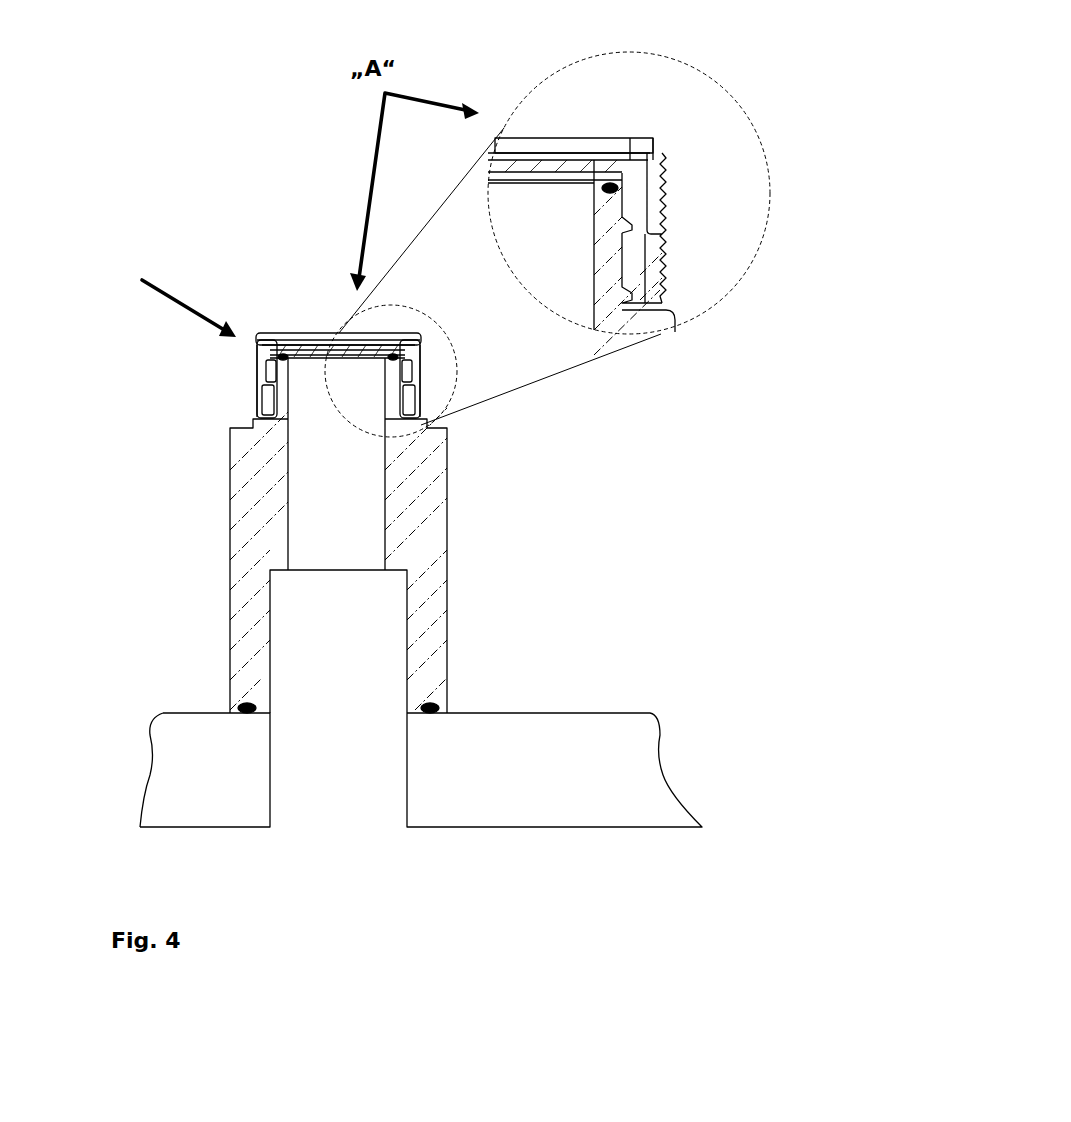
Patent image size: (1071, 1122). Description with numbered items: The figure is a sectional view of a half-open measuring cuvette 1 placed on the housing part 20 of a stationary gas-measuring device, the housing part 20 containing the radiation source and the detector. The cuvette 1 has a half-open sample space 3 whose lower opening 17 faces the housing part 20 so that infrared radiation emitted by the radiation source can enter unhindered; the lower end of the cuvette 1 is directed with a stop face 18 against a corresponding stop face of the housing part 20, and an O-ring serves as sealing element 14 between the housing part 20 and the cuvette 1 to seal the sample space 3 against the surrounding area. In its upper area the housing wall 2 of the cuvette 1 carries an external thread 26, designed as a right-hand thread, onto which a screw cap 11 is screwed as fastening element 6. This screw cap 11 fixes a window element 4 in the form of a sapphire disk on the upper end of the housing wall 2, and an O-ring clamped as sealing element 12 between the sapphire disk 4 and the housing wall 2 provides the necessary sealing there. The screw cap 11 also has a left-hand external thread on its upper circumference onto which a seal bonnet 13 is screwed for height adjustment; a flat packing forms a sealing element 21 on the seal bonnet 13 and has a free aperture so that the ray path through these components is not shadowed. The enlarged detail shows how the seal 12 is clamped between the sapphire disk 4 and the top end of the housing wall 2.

The measuring cuvette 1 is at (202, 518).
The housing wall 2 is at (424, 457).
The sample space 3 is at (346, 540).
The window element 4 is at (317, 348).
The fastening element 6 is at (818, 272).
The screw cap 11 is at (270, 390).
The sealing element 12 is at (282, 356).
The seal bonnet 13 is at (252, 360).
The sealing element 14 is at (437, 706).
The opening 17 is at (315, 606).
The stop face 18 is at (410, 712).
The housing part 20 is at (488, 753).
The sealing element 21 is at (330, 332).
The external thread 26 is at (263, 382).